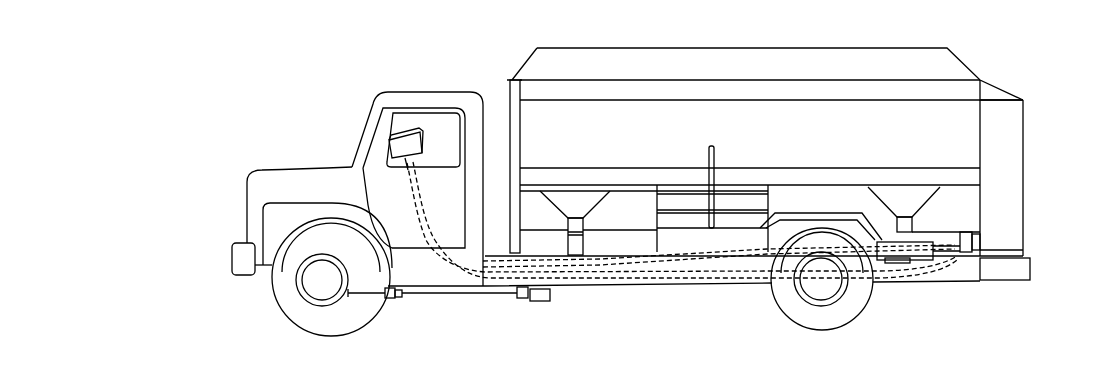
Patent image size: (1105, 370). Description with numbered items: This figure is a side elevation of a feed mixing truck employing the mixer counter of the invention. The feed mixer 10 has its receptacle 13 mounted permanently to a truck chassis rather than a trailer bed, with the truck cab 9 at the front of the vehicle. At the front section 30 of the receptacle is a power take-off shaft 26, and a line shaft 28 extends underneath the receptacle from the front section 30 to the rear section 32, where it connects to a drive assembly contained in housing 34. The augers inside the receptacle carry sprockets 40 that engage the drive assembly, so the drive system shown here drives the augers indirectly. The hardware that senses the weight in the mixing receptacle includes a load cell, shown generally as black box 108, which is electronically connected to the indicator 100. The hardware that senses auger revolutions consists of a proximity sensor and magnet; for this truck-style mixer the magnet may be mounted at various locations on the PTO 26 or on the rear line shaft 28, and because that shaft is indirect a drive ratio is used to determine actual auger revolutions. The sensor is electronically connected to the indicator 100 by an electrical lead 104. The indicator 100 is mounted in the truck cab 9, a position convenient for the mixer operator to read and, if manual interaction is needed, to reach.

The truck cab 9 is at (419, 98).
The feed mixer 10 is at (1015, 296).
The receptacle 13 is at (952, 148).
The power take-off shaft 26 is at (482, 292).
The line shaft 28 is at (643, 257).
The front section 30 is at (543, 127).
The rear section 32 is at (918, 90).
The housing 34 is at (1013, 122).
The sprockets 40 is at (1002, 217).
The indicator 100 is at (380, 148).
The electrical lead 104 is at (428, 233).
The load cell 108 is at (976, 262).